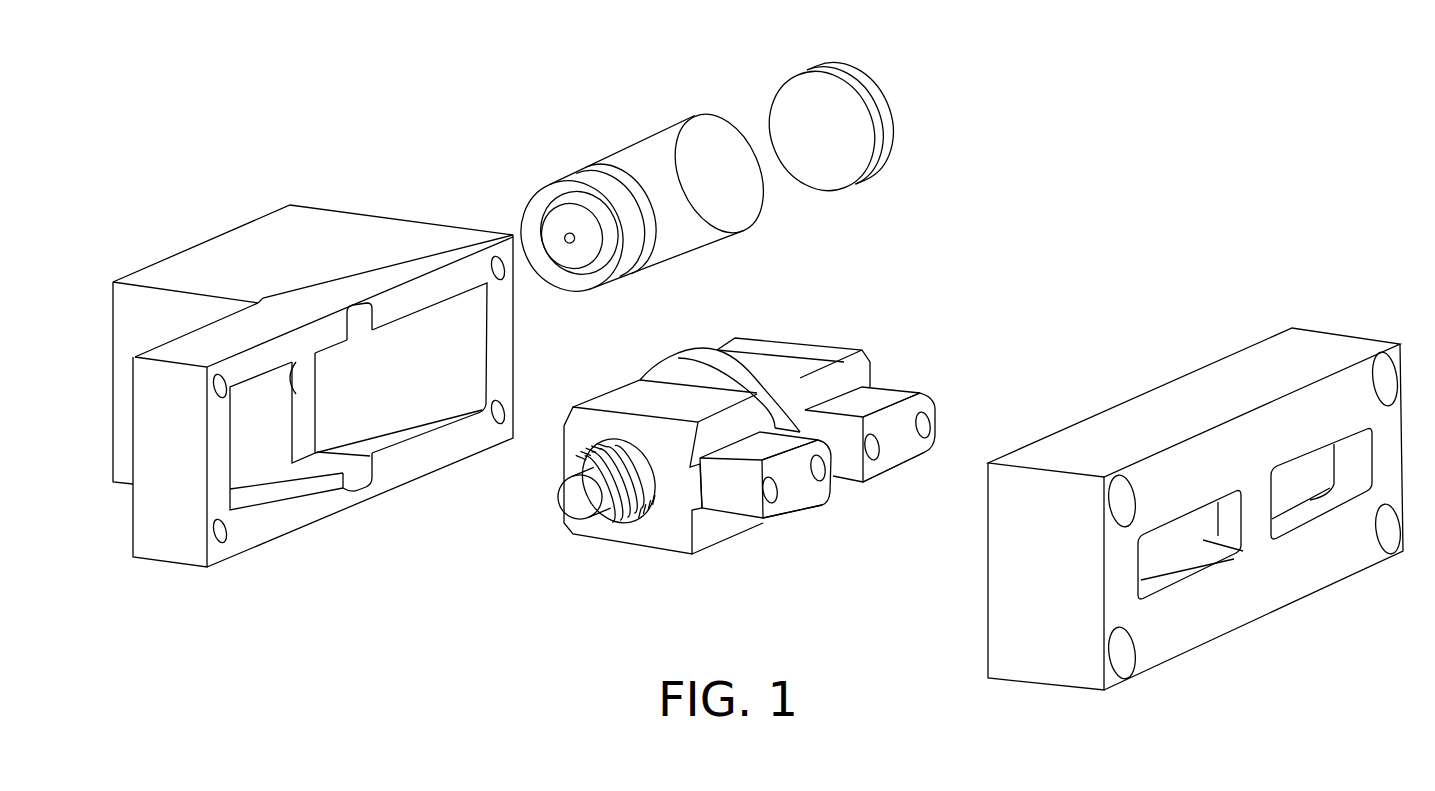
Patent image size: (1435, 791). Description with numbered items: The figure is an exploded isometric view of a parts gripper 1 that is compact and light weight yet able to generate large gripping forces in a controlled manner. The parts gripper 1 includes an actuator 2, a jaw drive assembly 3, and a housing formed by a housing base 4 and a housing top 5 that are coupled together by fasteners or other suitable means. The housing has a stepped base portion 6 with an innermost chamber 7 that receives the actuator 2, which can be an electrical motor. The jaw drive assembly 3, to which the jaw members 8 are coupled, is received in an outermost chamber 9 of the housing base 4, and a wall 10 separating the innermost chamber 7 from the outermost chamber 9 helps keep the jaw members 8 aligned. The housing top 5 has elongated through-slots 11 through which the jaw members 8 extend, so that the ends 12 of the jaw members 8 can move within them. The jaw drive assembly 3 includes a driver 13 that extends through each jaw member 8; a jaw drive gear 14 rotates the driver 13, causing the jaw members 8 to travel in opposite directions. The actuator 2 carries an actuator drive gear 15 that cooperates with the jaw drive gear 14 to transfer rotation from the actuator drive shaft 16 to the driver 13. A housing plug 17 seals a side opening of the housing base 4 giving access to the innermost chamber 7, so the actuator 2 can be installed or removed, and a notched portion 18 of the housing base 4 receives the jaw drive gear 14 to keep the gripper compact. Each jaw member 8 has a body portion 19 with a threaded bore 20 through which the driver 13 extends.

The parts gripper 1 is at (1113, 156).
The actuator 2 is at (670, 130).
The jaw drive assembly 3 is at (558, 594).
The housing base 4 is at (212, 236).
The housing top 5 is at (1400, 344).
The stepped base portion 6 is at (263, 298).
The innermost chamber 7 is at (297, 392).
The jaw members 8 is at (728, 543).
The outermost chamber 9 is at (282, 477).
The wall 10 is at (387, 392).
The through-slots 11 is at (1175, 545).
The ends of jaw members 12 is at (790, 504).
The driver 13 is at (567, 498).
The jaw drive gear 14 is at (676, 357).
The actuator drive gear 15 is at (583, 285).
The actuator drive shaft 16 is at (568, 238).
The housing plug 17 is at (859, 77).
The notched portion 18 is at (357, 477).
The body portions 19 is at (660, 523).
The threaded bores 20 is at (580, 460).